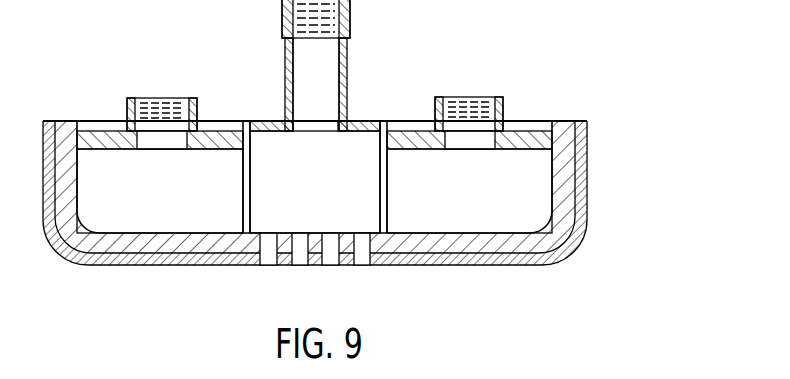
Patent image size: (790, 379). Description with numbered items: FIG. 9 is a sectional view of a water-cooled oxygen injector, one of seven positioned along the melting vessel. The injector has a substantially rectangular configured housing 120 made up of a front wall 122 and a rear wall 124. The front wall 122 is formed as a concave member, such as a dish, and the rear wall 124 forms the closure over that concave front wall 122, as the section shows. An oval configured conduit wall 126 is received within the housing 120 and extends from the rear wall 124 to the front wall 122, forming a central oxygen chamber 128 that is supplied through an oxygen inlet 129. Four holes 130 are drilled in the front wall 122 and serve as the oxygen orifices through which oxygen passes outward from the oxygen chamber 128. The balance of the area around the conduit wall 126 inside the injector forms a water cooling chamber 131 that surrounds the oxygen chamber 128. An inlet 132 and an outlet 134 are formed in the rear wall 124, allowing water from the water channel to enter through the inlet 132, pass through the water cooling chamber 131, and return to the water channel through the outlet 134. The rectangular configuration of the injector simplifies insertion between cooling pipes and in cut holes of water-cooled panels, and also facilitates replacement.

The housing 120 is at (591, 96).
The front wall 122 is at (490, 242).
The rear wall 124 is at (527, 124).
The conduit wall 126 is at (243, 210).
The oxygen chamber 128 is at (332, 200).
The oxygen inlet 129 is at (350, 33).
The holes 130 is at (362, 266).
The water cooling chamber 131 is at (175, 200).
The inlet 132 is at (158, 99).
The outlet 134 is at (457, 97).